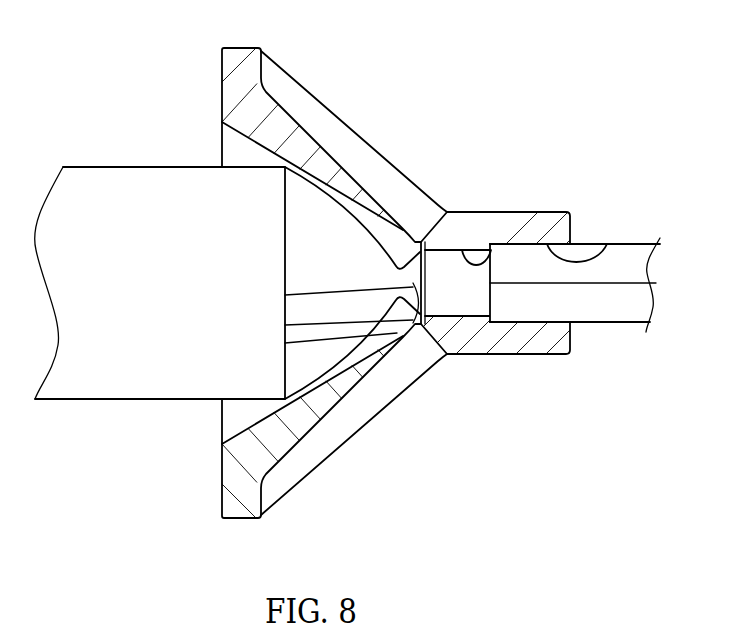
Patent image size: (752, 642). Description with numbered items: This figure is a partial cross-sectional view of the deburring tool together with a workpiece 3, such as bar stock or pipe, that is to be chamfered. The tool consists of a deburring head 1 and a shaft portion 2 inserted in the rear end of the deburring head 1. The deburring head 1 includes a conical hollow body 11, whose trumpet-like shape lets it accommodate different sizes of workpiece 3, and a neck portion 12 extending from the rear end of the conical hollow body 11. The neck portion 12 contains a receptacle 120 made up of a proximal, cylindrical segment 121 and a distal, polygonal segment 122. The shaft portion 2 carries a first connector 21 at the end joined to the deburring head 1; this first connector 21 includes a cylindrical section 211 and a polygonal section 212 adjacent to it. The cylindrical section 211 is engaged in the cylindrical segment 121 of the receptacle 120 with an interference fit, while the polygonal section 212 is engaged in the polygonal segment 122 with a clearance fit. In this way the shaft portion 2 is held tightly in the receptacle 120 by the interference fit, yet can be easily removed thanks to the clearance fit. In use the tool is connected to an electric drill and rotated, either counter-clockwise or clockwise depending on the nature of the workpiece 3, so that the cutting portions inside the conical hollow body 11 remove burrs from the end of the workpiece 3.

The deburring head 1 is at (526, 90).
The conical hollow body 11 is at (352, 132).
The neck portion 12 is at (495, 222).
The receptacle 120 is at (588, 112).
The cylindrical segment 121 is at (491, 248).
The polygonal segment 122 is at (606, 247).
The shaft portion 2 is at (635, 253).
The first connector 21 is at (563, 435).
The cylindrical section 211 is at (465, 305).
The polygonal section 212 is at (545, 313).
The workpiece 3 is at (173, 165).